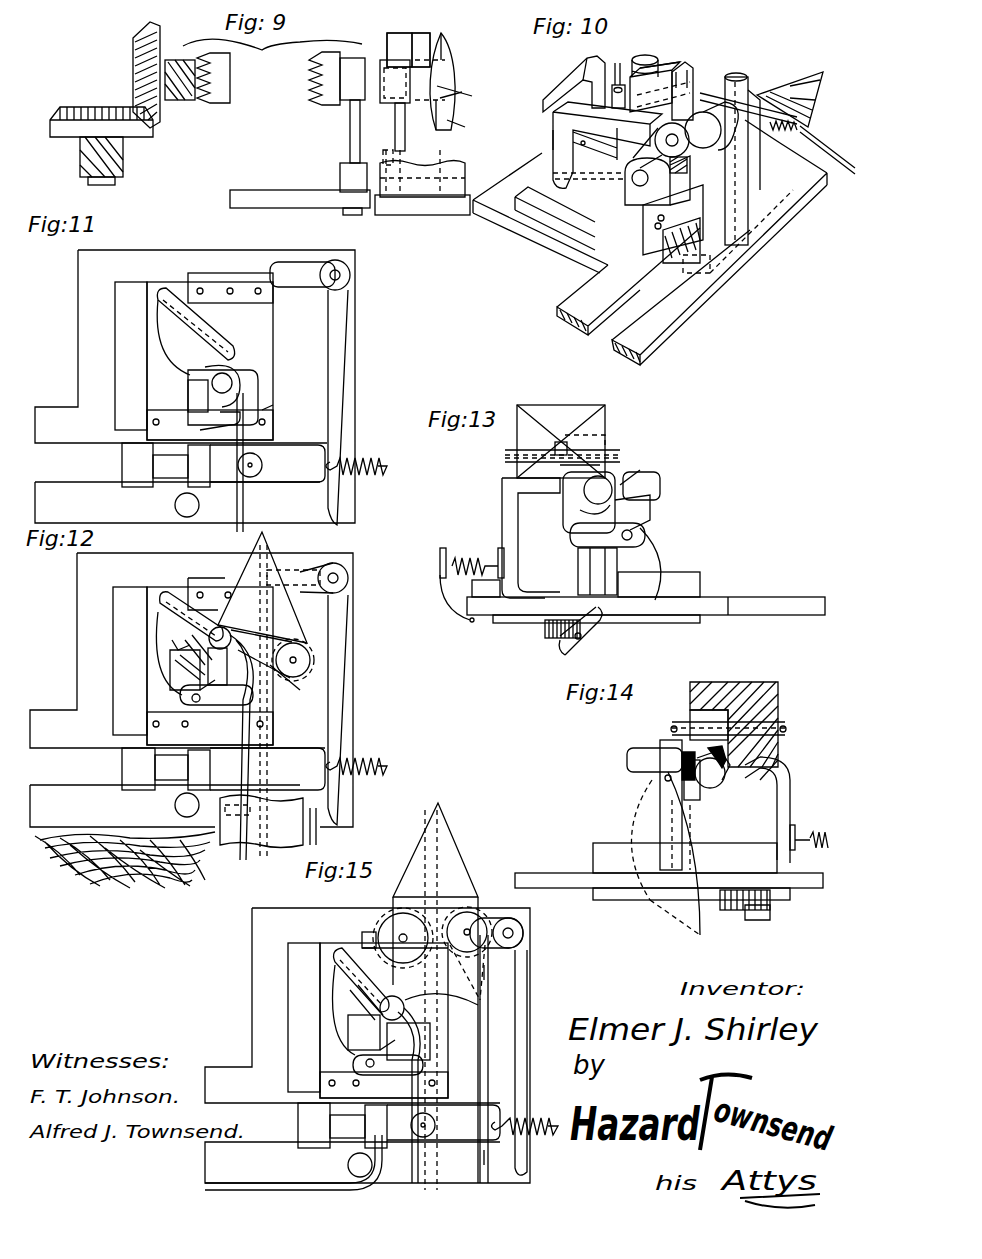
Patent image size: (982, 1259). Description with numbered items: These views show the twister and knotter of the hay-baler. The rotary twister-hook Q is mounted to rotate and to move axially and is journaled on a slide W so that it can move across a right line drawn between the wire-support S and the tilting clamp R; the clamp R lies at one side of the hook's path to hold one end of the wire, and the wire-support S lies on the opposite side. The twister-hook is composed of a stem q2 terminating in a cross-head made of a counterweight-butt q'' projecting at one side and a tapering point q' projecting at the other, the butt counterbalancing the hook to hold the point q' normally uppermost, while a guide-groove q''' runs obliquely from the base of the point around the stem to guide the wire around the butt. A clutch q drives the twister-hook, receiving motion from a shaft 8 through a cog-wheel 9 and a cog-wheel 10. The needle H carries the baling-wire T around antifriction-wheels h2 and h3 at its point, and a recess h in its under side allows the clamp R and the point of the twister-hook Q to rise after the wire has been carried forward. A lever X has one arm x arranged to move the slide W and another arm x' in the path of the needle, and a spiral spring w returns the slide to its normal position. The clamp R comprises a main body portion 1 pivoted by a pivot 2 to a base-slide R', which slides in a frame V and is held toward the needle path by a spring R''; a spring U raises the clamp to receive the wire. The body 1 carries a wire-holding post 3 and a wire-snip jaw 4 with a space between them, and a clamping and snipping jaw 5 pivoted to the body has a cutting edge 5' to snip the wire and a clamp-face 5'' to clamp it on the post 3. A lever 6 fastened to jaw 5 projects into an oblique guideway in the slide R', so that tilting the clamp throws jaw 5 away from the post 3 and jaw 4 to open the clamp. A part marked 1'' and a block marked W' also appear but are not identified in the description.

In FIG. 9, the main body portion 1 is at (399, 105).
In FIG. 10, the main body portion 1 is at (658, 145).
In FIG. 11, the main body portion 1 is at (223, 397).
In FIG. 12, the main body portion 1 is at (217, 666).
In FIG. 15, the main body portion 1 is at (423, 1034).
In FIG. 11, the lever 1'' is at (201, 324).
In FIG. 12, the lever 1'' is at (191, 607).
In FIG. 15, the lever 1'' is at (360, 967).
In FIG. 9, the pivot 2 is at (386, 162).
In FIG. 10, the pivot 2 is at (648, 186).
In FIG. 13, the pivot 2 is at (580, 565).
In FIG. 10, the wire-holding post 3 is at (646, 56).
In FIG. 11, the wire-holding post 3 is at (222, 383).
In FIG. 12, the wire-holding post 3 is at (220, 626).
In FIG. 13, the wire-holding post 3 is at (612, 478).
In FIG. 15, the wire-holding post 3 is at (410, 1000).
In FIG. 9, the wire-snip jaw 4 is at (422, 33).
In FIG. 10, the wire-snip jaw 4 is at (692, 72).
In FIG. 11, the wire-snip jaw 4 is at (255, 421).
In FIG. 12, the wire-snip jaw 4 is at (250, 700).
In FIG. 13, the wire-snip jaw 4 is at (605, 462).
In FIG. 14, the wire-snip jaw 4 is at (780, 755).
In FIG. 15, the wire-snip jaw 4 is at (384, 1085).
In FIG. 9, the clamping and snipping jaw 5 is at (387, 50).
In FIG. 10, the clamping and snipping jaw 5 is at (668, 73).
In FIG. 11, the clamping and snipping jaw 5 is at (198, 396).
In FIG. 12, the clamping and snipping jaw 5 is at (165, 670).
In FIG. 13, the clamping and snipping jaw 5 is at (644, 512).
In FIG. 14, the clamping and snipping jaw 5 is at (654, 770).
In FIG. 15, the clamping and snipping jaw 5 is at (340, 1020).
In FIG. 11, the cutting edge 5' is at (202, 423).
In FIG. 12, the cutting edge 5' is at (203, 696).
In FIG. 15, the cutting edge 5' is at (374, 1063).
In FIG. 11, the clamp-face 5'' is at (228, 377).
In FIG. 12, the clamp-face 5'' is at (174, 636).
In FIG. 10, the lever 6 is at (553, 128).
In FIG. 11, the lever 6 is at (165, 352).
In FIG. 12, the lever 6 is at (184, 653).
In FIG. 13, the lever 6 is at (648, 545).
In FIG. 14, the lever 6 is at (640, 812).
In FIG. 15, the lever 6 is at (358, 1010).
In FIG. 9, the shaft 8 is at (112, 182).
In FIG. 9, the cog-wheel 9 is at (76, 108).
In FIG. 9, the cog-wheel 10 is at (133, 76).
In FIG. 9, the clutch q is at (268, 92).
In FIG. 9, the point q' is at (452, 81).
In FIG. 10, the point q' is at (752, 114).
In FIG. 11, the point q' is at (255, 463).
In FIG. 12, the point q' is at (272, 684).
In FIG. 14, the point q' is at (715, 785).
In FIG. 15, the point q' is at (431, 1142).
In FIG. 9, the counterweight-butt q'' is at (464, 125).
In FIG. 12, the counterweight-butt q'' is at (268, 804).
In FIG. 9, the guide-groove q''' is at (465, 94).
In FIG. 10, the stem q2 is at (700, 150).
In FIG. 11, the stem q2 is at (155, 466).
In FIG. 9, the rotary twister-hook Q is at (446, 90).
In FIG. 10, the rotary twister-hook Q is at (726, 80).
In FIG. 11, the rotary twister-hook Q is at (205, 466).
In FIG. 12, the rotary twister-hook Q is at (250, 762).
In FIG. 13, the rotary twister-hook Q is at (648, 475).
In FIG. 15, the rotary twister-hook Q is at (432, 1122).
In FIG. 9, the clamp R is at (405, 37).
In FIG. 10, the clamp R is at (663, 47).
In FIG. 11, the clamp R is at (274, 398).
In FIG. 12, the clamp R is at (170, 691).
In FIG. 13, the clamp R is at (634, 458).
In FIG. 15, the clamp R is at (347, 1048).
In FIG. 10, the slide R' is at (607, 160).
In FIG. 11, the slide R' is at (131, 356).
In FIG. 12, the slide R' is at (130, 661).
In FIG. 15, the slide R' is at (305, 1017).
In FIG. 13, the spring R'' is at (571, 635).
In FIG. 14, the spring R'' is at (745, 905).
In FIG. 10, the wire-support S is at (752, 183).
In FIG. 11, the wire-support S is at (187, 505).
In FIG. 12, the wire-support S is at (187, 805).
In FIG. 15, the wire-support S is at (360, 1165).
In FIG. 10, the baling-wire T is at (786, 114).
In FIG. 11, the baling-wire T is at (243, 508).
In FIG. 12, the baling-wire T is at (144, 760).
In FIG. 14, the baling-wire T is at (680, 805).
In FIG. 15, the baling-wire T is at (440, 1094).
In FIG. 13, the spring U is at (580, 560).
In FIG. 10, the frame V is at (492, 205).
In FIG. 11, the frame V is at (195, 386).
In FIG. 12, the frame V is at (191, 690).
In FIG. 13, the frame V is at (726, 608).
In FIG. 14, the frame V is at (568, 880).
In FIG. 15, the frame V is at (367, 1045).
In FIG. 9, the slide W is at (433, 182).
In FIG. 11, the slide W is at (267, 463).
In FIG. 13, the slide W is at (586, 584).
In FIG. 14, the slide W is at (685, 858).
In FIG. 15, the slide W is at (331, 1125).
In FIG. 10, the block W' is at (673, 224).
In FIG. 10, the spiral spring w is at (770, 126).
In FIG. 11, the spiral spring w is at (355, 458).
In FIG. 12, the spiral spring w is at (155, 768).
In FIG. 13, the spiral spring w is at (466, 558).
In FIG. 14, the spiral spring w is at (809, 832).
In FIG. 15, the spiral spring w is at (525, 1118).
In FIG. 10, the lever X is at (615, 77).
In FIG. 11, the lever X is at (328, 350).
In FIG. 12, the lever X is at (340, 630).
In FIG. 14, the lever X is at (790, 792).
In FIG. 15, the lever X is at (527, 992).
In FIG. 10, the arm x is at (827, 150).
In FIG. 10, the arm x' is at (563, 84).
In FIG. 11, the arm x' is at (310, 259).
In FIG. 12, the arm x' is at (307, 560).
In FIG. 15, the arm x' is at (510, 919).
In FIG. 10, the needle H is at (812, 74).
In FIG. 12, the needle H is at (297, 615).
In FIG. 13, the needle H is at (561, 441).
In FIG. 14, the needle H is at (765, 682).
In FIG. 15, the needle H is at (484, 875).
In FIG. 12, the recess h is at (296, 650).
In FIG. 14, the recess h is at (690, 712).
In FIG. 13, the antifriction-wheel h2 is at (605, 445).
In FIG. 15, the antifriction-wheel h2 is at (370, 932).
In FIG. 13, the antifriction-wheel h3 is at (510, 460).
In FIG. 14, the antifriction-wheel h3 is at (786, 722).